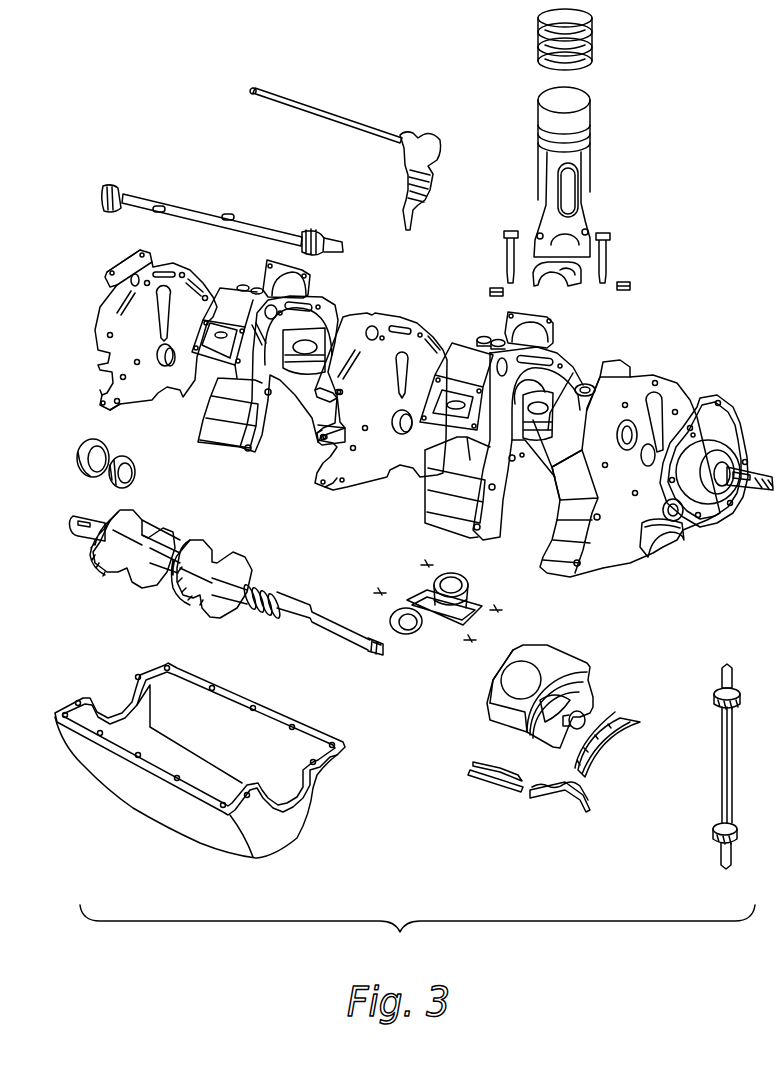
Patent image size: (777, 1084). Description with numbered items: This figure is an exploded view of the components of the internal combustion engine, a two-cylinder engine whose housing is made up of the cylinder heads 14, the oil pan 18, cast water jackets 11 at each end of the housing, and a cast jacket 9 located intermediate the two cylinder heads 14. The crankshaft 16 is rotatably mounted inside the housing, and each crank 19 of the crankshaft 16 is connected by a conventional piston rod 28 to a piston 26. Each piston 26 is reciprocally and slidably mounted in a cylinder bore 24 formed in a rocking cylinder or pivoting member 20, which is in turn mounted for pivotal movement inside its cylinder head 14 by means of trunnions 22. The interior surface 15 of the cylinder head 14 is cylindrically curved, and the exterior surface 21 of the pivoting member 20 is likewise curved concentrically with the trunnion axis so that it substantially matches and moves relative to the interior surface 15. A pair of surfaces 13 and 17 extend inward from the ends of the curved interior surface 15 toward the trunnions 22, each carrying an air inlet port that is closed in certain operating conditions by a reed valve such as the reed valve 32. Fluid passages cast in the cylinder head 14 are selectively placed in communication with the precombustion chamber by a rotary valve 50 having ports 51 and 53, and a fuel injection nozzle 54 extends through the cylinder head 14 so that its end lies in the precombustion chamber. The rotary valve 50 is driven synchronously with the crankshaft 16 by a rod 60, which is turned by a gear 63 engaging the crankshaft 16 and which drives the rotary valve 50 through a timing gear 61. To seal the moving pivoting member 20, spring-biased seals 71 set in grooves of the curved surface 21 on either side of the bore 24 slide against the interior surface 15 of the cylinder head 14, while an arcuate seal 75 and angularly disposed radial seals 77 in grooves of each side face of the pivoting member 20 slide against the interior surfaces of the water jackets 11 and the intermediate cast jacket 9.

The cast jacket 9 is at (357, 470).
The cast water jacket 11 is at (97, 318).
The surface 13 is at (528, 447).
The cylinder head 14 is at (332, 302).
The interior surface 15 is at (290, 392).
The crankshaft 16 is at (291, 603).
The surface 17 is at (520, 388).
The oil pan 18 is at (262, 840).
The crank 19 is at (142, 515).
The pivoting member 20 is at (567, 657).
The surface 21 is at (520, 652).
The trunnions 22 is at (583, 720).
The cylinder bore 24 is at (503, 681).
The piston 26 is at (585, 107).
The piston rod 28 is at (583, 213).
The reed valve 32 is at (452, 583).
The rotary valve 50 is at (205, 213).
The port 51 is at (157, 208).
The port 53 is at (233, 216).
The fuel injection nozzle 54 is at (423, 213).
The rod 60 is at (720, 755).
The timing gear 61 is at (717, 693).
The gear 63 is at (713, 833).
The seal 71 is at (483, 780).
The seal 75 is at (610, 740).
The seal 77 is at (557, 803).